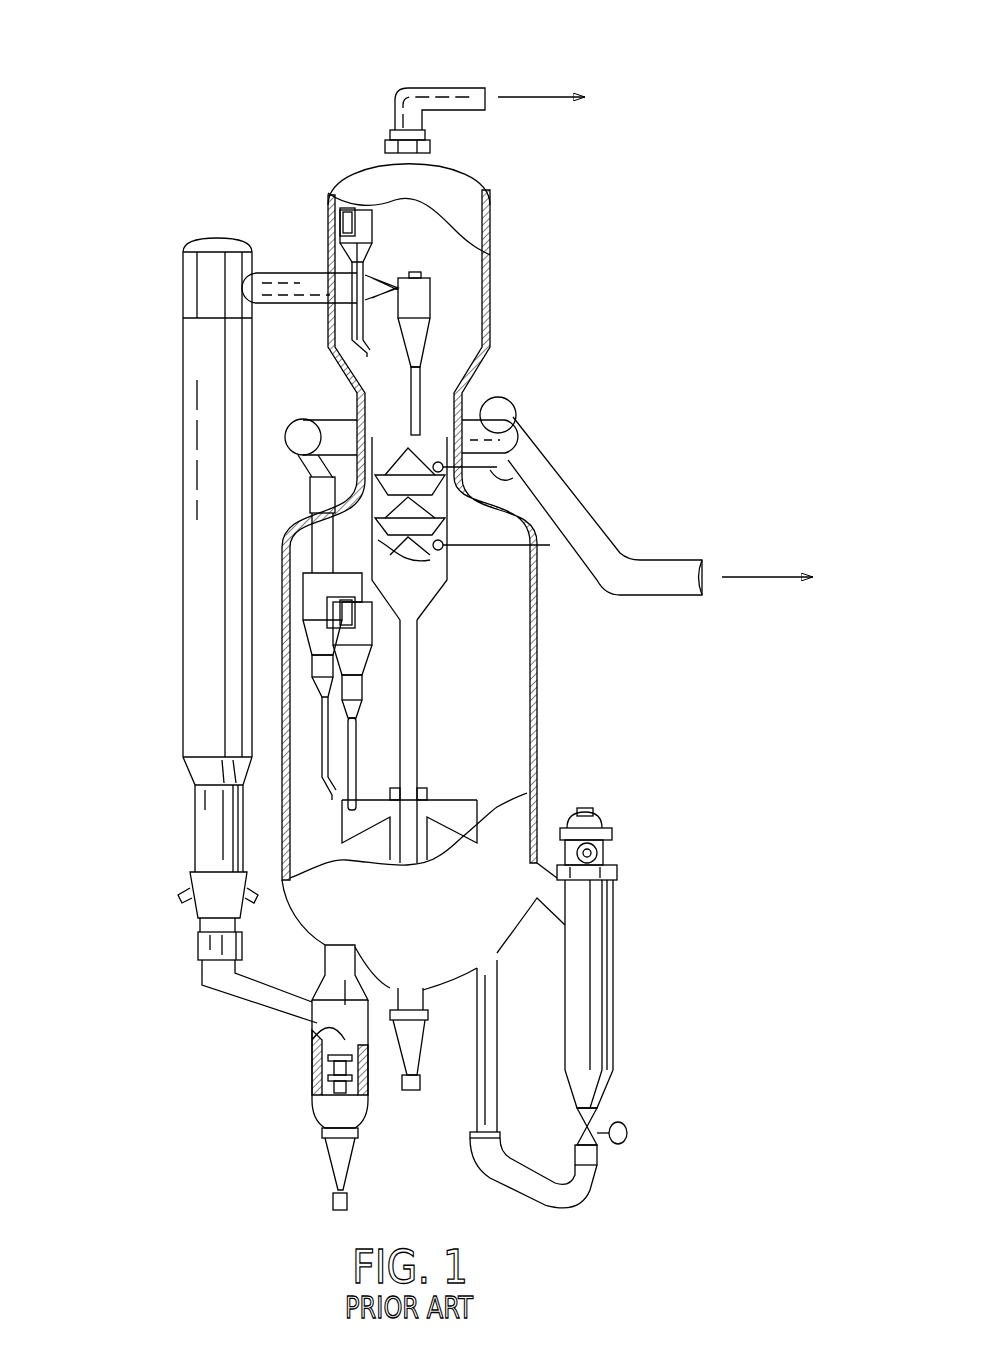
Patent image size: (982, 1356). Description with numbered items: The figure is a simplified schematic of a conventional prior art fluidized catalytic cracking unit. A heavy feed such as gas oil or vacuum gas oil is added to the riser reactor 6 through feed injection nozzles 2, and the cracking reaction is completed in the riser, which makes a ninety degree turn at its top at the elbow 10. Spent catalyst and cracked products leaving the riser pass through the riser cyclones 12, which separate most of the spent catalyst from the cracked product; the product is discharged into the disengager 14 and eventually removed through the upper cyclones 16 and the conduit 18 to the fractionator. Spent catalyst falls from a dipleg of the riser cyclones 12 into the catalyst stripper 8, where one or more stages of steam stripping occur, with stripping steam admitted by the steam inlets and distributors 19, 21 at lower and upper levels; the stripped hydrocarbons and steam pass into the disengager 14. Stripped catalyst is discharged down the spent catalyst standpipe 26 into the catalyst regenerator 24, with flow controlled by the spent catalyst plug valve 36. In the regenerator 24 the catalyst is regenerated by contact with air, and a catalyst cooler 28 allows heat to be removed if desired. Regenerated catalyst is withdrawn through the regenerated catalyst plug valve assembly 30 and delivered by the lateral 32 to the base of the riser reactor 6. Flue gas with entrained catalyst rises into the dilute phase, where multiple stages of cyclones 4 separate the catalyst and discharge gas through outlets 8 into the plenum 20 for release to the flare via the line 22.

The feed injection nozzles 2 is at (183, 892).
The cyclones 4 is at (318, 640).
The riser reactor 6 is at (200, 553).
The catalyst stripper 8 is at (345, 490).
The elbow 10 is at (183, 290).
The riser cyclones 12 is at (420, 300).
The disengager 14 is at (470, 270).
The upper cyclones 16 is at (335, 248).
The conduit 18 is at (452, 88).
The steam inlet and distributor 19 is at (475, 555).
The plenum 20 is at (518, 420).
The steam inlet and distributor 21 is at (530, 478).
The line 22 is at (739, 578).
The catalyst regenerator 24 is at (537, 660).
The spent catalyst standpipe 26 is at (418, 740).
The catalyst cooler 28 is at (617, 975).
The regenerated catalyst plug valve assembly 30 is at (318, 1095).
The lateral 32 is at (240, 1012).
The spent catalyst plug valve 36 is at (430, 1003).